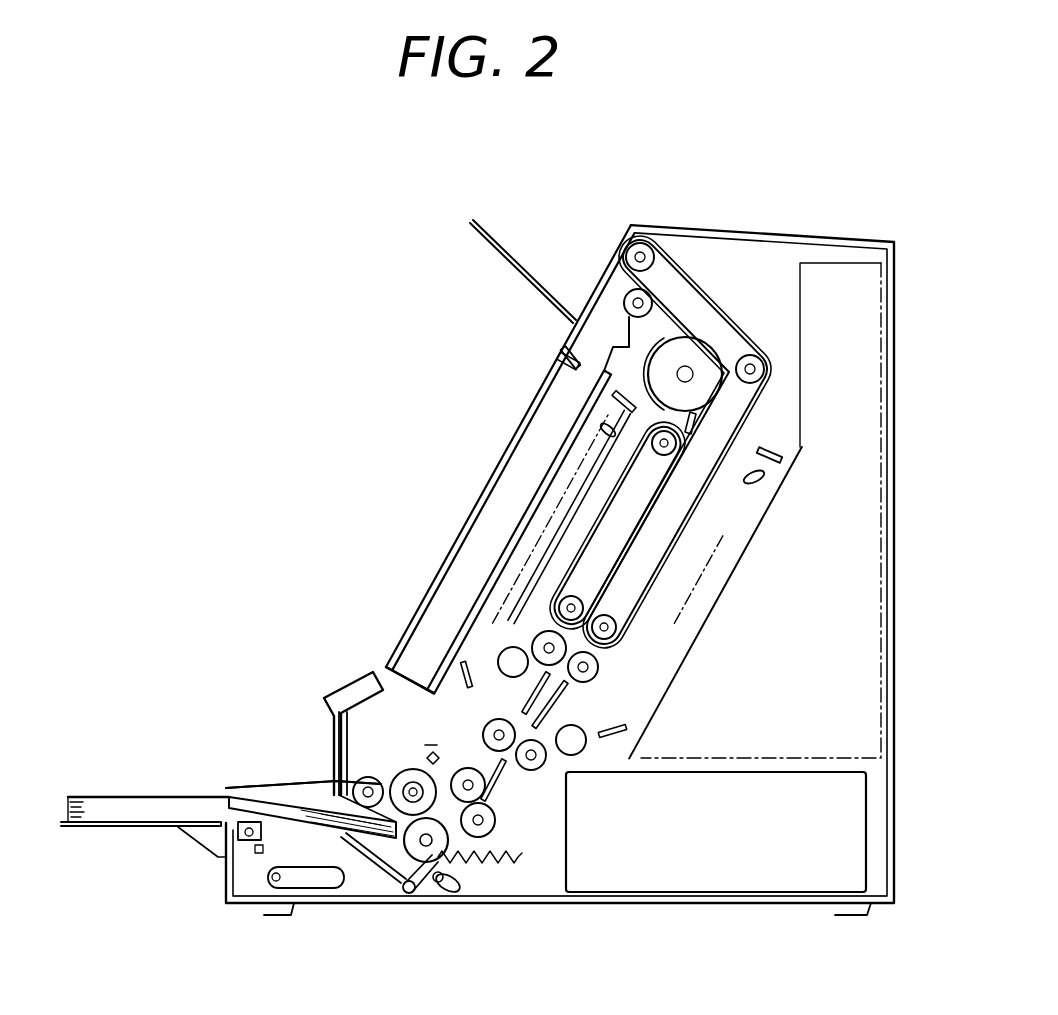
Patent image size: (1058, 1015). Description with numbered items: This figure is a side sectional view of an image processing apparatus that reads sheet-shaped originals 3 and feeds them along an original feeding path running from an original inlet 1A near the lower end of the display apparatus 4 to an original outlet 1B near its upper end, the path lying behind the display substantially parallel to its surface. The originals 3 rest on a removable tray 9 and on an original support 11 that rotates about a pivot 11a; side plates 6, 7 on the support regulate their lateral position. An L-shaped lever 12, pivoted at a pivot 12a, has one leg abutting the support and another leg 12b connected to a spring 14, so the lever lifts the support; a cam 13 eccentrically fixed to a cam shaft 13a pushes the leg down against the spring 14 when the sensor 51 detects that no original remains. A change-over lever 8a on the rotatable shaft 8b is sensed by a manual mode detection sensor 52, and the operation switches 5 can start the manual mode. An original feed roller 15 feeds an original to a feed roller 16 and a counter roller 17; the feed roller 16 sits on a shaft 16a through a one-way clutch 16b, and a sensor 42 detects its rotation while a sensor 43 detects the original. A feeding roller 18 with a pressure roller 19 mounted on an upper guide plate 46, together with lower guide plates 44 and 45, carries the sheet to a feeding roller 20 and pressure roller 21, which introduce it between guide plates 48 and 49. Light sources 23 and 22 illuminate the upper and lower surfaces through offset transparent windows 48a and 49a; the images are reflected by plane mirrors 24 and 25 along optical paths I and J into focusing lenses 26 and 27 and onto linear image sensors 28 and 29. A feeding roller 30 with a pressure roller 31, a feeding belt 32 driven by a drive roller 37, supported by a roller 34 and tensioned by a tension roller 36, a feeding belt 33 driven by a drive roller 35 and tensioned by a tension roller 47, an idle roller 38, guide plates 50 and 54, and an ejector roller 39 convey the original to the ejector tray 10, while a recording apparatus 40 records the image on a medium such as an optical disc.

The original inlet 1A is at (317, 840).
The original outlet 1B is at (593, 303).
The sheet-shaped originals 3 is at (135, 797).
The display apparatus 4 is at (482, 537).
The operation switches 5 is at (347, 693).
The side plate 6 is at (262, 795).
The side plate 7 is at (303, 784).
The lever 8a is at (322, 880).
The rotatable shaft 8b is at (240, 905).
The tray 9 is at (110, 824).
The ejector tray 10 is at (513, 262).
The original support 11 is at (257, 813).
The pivot 11a is at (220, 822).
The L-shaped lever 12 is at (408, 852).
The pivot 12a is at (420, 872).
The leg 12b is at (440, 882).
The cam 13 is at (461, 884).
The cam shaft 13a is at (414, 890).
The spring 14 is at (507, 868).
The original feed roller 15 is at (344, 790).
The feed roller 16 is at (370, 778).
The shaft 16a is at (400, 775).
The one-way clutch 16b is at (412, 790).
The counter roller 17 is at (440, 842).
The feeding roller 18 is at (521, 856).
The pressure roller 19 is at (434, 752).
The feeding roller 20 is at (545, 768).
The pressure roller 21 is at (431, 690).
The light source 22 is at (585, 755).
The light source 23 is at (445, 590).
The plane mirror 24 is at (632, 741).
The plane mirror 25 is at (425, 622).
The focusing lens 26 is at (764, 486).
The focusing lens 27 is at (598, 428).
The linear image sensor 28 is at (782, 466).
The linear image sensor 29 is at (560, 354).
The feeding roller 30 is at (600, 670).
The pressure roller 31 is at (546, 630).
The feeding belt 32 is at (660, 572).
The feeding belt 33 is at (606, 540).
The roller 34 is at (620, 640).
The drive roller 35 is at (652, 448).
The tension roller 36 is at (756, 358).
The drive roller 37 is at (645, 248).
The idle roller 38 is at (705, 342).
The ejector roller 39 is at (627, 298).
The recording apparatus 40 is at (665, 892).
The sensor 42 is at (430, 745).
The sensor 43 is at (496, 820).
The lower guide plate 44 is at (395, 872).
The lower guide plate 45 is at (506, 784).
The upper guide plate 46 is at (467, 768).
The tension roller 47 is at (563, 596).
The guide plate 48 is at (507, 650).
The transparent window 48a is at (505, 714).
The guide plate 49 is at (548, 692).
The transparent window 49a is at (562, 720).
The guide plate 50 is at (692, 358).
The sensor 51 is at (333, 797).
The manual mode detection sensor 52 is at (254, 850).
The guide plate 54 is at (700, 428).
The optical path I is at (742, 552).
The optical path J is at (520, 473).